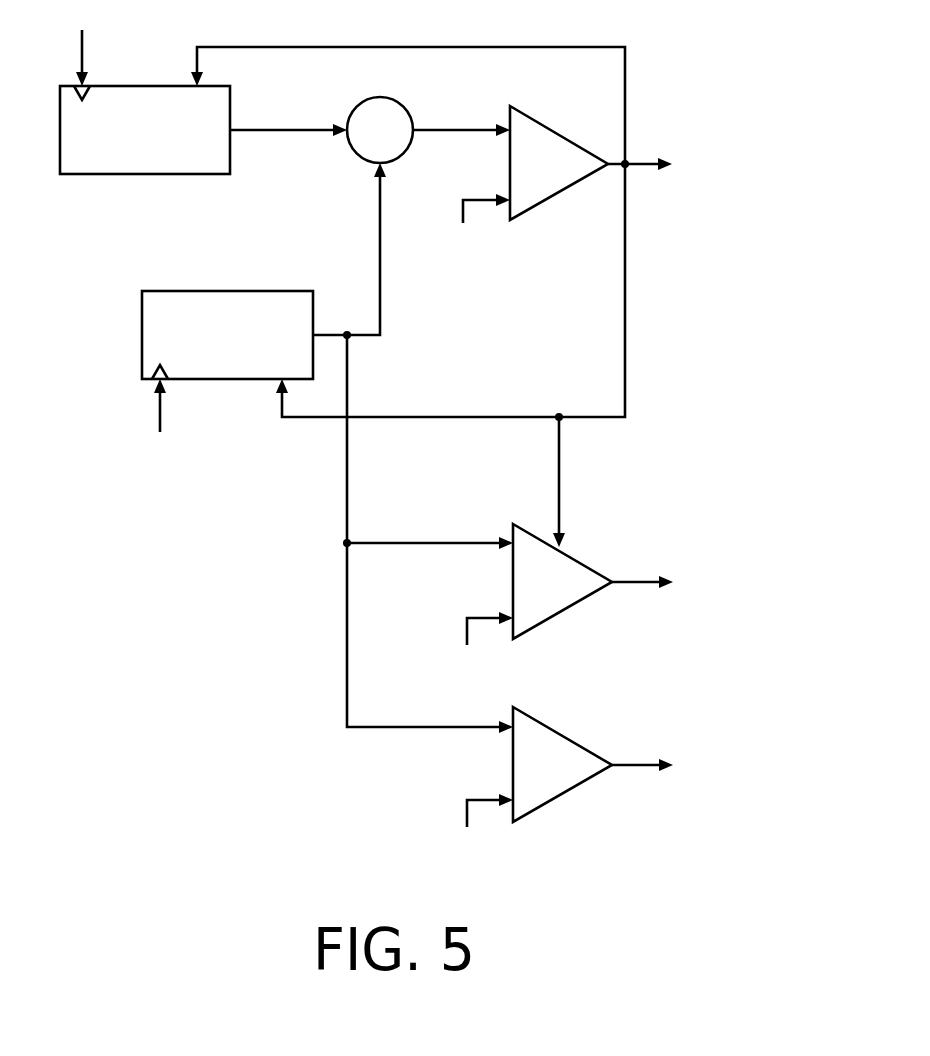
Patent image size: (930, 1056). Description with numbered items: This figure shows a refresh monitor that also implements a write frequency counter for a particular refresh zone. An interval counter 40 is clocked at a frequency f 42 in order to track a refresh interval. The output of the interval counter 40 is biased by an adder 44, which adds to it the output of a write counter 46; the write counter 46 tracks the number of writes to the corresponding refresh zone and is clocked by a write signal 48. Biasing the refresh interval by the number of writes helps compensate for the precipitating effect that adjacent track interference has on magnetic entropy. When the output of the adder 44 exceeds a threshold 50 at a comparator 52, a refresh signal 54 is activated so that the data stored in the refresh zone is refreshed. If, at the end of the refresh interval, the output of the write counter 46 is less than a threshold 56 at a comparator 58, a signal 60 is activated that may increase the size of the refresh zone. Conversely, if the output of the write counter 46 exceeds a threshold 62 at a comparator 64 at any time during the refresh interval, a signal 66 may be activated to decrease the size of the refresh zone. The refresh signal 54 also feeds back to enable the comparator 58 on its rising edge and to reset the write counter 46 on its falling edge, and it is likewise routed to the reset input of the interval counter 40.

The interval counter 40 is at (146, 176).
The frequency f 42 is at (80, 51).
The adder 44 is at (357, 160).
The write counter 46 is at (226, 289).
The write signal 48 is at (158, 416).
The threshold 50 is at (462, 210).
The comparator 52 is at (558, 198).
The refresh signal 54 is at (643, 160).
The threshold 56 is at (466, 626).
The comparator 58 is at (566, 614).
The signal 60 is at (640, 578).
The threshold 62 is at (466, 808).
The comparator 64 is at (567, 796).
The signal 66 is at (640, 761).